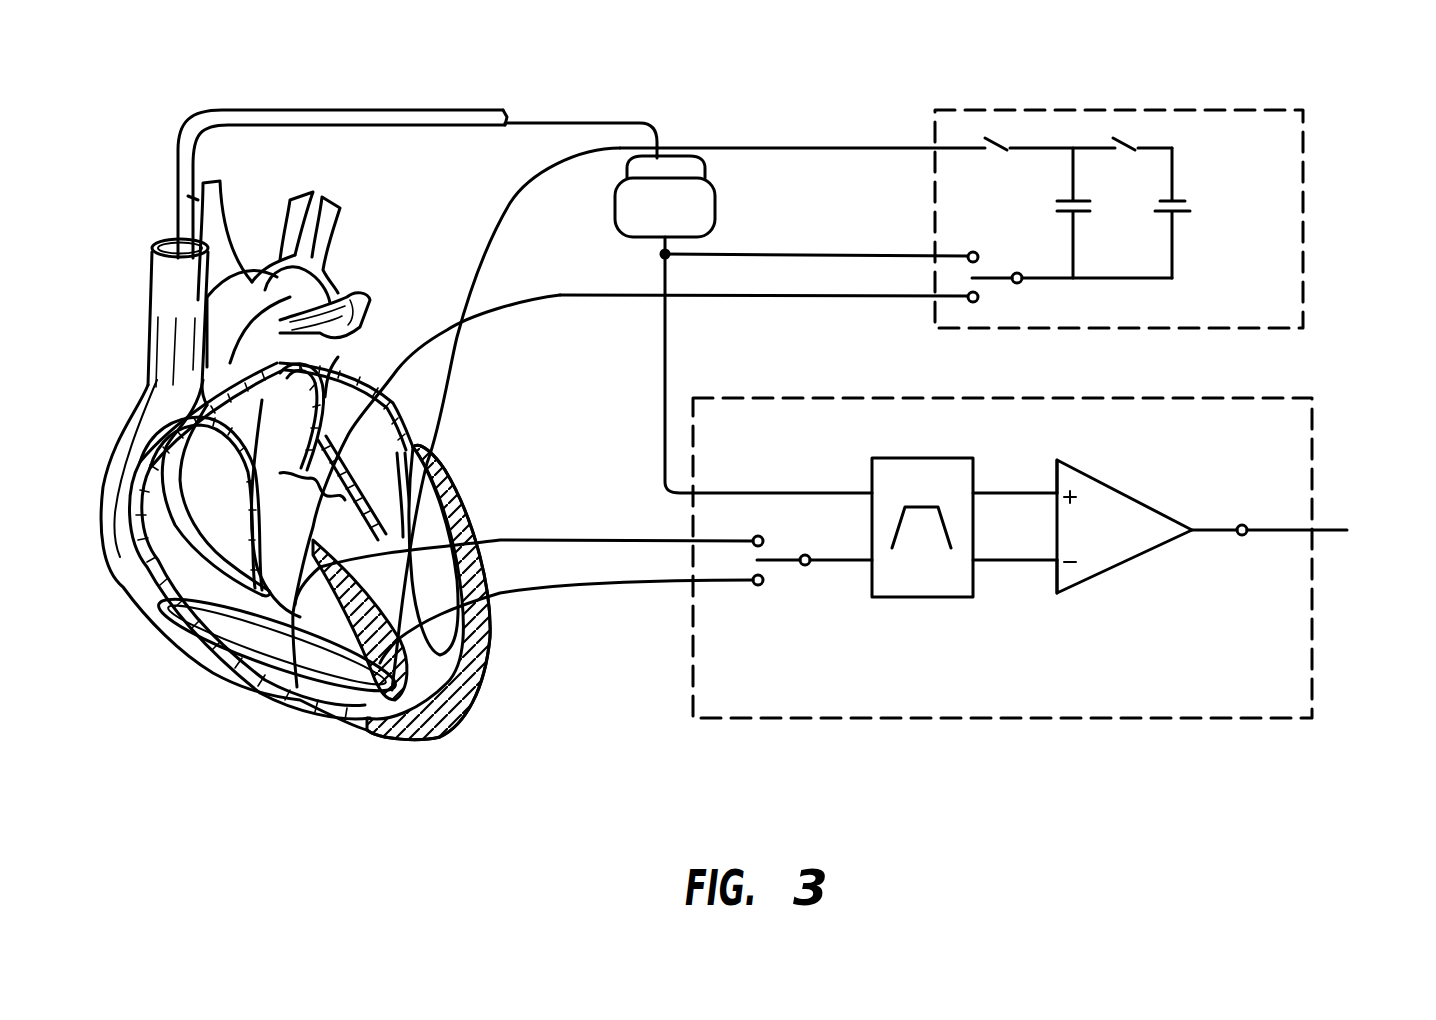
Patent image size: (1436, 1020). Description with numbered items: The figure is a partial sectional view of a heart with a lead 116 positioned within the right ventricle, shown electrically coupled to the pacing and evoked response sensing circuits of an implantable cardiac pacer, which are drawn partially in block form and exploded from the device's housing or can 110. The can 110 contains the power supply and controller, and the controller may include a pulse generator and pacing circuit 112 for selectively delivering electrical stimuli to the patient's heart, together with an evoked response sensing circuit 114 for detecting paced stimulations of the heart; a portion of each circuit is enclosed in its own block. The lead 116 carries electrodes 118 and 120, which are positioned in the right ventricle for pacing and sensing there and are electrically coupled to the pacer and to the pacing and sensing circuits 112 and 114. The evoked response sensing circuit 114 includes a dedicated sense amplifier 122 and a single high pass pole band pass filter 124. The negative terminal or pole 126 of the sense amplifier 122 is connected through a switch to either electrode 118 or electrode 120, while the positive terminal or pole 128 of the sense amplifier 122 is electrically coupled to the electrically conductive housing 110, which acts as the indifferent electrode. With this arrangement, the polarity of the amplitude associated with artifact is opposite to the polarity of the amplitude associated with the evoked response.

The housing or can 110 is at (718, 193).
The pacing circuit 112 is at (1316, 200).
The evoked response sensing circuit 114 is at (1313, 588).
The lead 116 is at (417, 110).
The electrode 118 is at (392, 690).
The electrode 120 is at (297, 687).
The sense amplifier 122 is at (1117, 568).
The band pass filter 124 is at (862, 578).
The negative terminal or pole 126 is at (1085, 567).
The positive terminal or pole 128 is at (1085, 495).